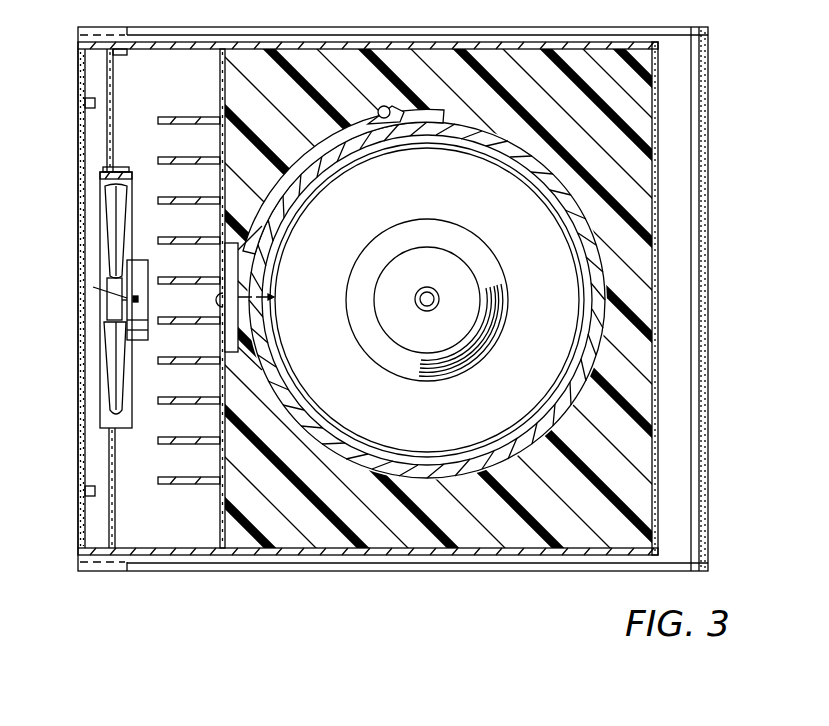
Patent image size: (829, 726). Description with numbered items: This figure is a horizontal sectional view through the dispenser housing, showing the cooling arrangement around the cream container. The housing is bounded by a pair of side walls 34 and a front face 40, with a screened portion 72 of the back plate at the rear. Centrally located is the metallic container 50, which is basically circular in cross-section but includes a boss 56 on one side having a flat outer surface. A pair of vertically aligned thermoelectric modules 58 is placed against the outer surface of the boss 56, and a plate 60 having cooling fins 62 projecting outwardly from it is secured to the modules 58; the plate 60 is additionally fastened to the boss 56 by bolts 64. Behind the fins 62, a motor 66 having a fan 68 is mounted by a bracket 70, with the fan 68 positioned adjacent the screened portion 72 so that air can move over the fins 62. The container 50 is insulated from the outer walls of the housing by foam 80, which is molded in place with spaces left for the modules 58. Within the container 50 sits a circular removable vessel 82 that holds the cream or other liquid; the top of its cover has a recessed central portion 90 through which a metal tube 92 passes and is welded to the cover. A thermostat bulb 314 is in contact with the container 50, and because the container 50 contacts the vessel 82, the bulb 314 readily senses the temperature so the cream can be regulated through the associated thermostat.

The side walls 34 is at (370, 26).
The front face 40 is at (710, 395).
The metallic container 50 is at (557, 405).
The boss 56 is at (242, 263).
The thermoelectric modules 58 is at (235, 328).
The plate 60 is at (220, 135).
The cooling fins 62 is at (200, 86).
The bolts 64 is at (274, 297).
The motor 66 is at (142, 277).
The fan 68 is at (120, 193).
The bracket 70 is at (117, 173).
The screened portion 72 is at (78, 213).
The foam 80 is at (592, 58).
The removable vessel 82 is at (582, 339).
The recessed central portion 90 is at (485, 254).
The metal tube 92 is at (445, 280).
The thermostat bulb 314 is at (386, 120).